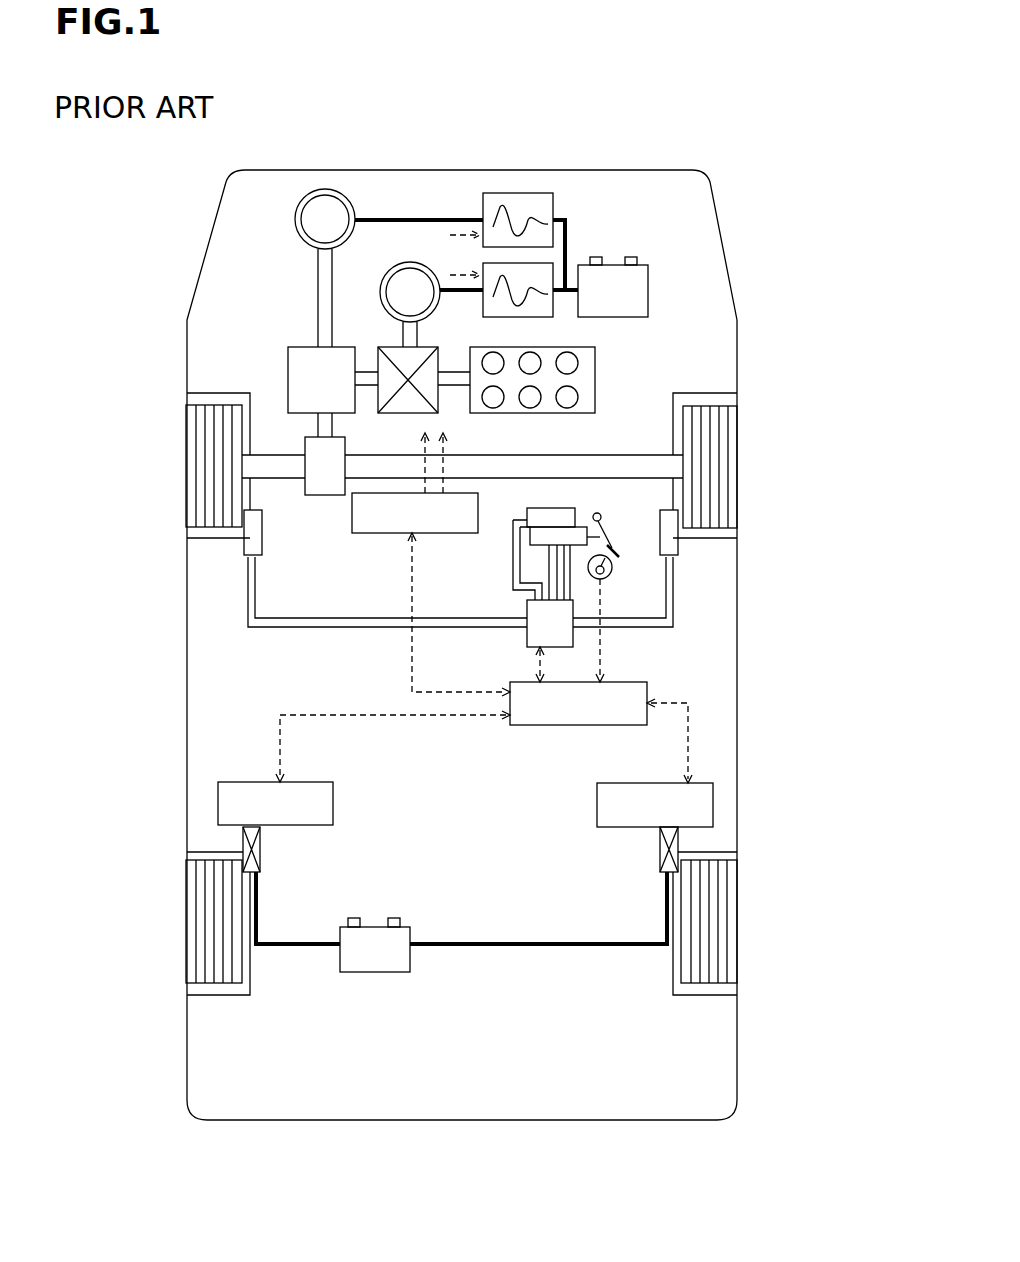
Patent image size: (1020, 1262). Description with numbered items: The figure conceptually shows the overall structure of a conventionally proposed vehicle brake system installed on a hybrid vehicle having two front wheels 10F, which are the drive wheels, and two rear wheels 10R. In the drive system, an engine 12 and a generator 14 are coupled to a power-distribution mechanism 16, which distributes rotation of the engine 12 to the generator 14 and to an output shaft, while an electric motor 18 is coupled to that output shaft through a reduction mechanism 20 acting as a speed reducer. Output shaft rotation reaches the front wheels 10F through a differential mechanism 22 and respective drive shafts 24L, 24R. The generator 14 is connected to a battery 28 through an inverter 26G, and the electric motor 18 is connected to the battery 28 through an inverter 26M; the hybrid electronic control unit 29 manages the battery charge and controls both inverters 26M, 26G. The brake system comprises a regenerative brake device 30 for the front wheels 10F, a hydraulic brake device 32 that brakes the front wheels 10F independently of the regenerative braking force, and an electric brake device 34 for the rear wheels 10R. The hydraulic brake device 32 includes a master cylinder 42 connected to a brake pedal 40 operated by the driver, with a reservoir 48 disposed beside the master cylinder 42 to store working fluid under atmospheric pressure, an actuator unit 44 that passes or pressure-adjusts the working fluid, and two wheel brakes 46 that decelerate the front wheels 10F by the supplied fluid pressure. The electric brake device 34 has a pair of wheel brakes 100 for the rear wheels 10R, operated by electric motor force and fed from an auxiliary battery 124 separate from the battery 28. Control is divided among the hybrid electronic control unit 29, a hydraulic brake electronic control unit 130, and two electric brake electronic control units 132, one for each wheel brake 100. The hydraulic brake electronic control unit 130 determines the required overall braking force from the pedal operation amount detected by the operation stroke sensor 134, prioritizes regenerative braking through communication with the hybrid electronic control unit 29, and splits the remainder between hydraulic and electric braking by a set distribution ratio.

The front wheels 10F is at (190, 417).
The rear wheels 10R is at (190, 968).
The engine 12 is at (588, 377).
The generator 14 is at (392, 266).
The power-distribution mechanism 16 is at (380, 355).
The electric motor 18 is at (304, 200).
The reduction mechanism 20 is at (300, 355).
The differential mechanism 22 is at (346, 441).
The left drive shaft 24L is at (278, 465).
The right drive shaft 24R is at (498, 460).
The inverter for electric motor 26M is at (530, 199).
The inverter for generator 26G is at (523, 312).
The battery 28 is at (640, 279).
The hybrid electronic control unit (HB-ECU) 29 is at (390, 535).
The regenerative brake device 30 is at (380, 194).
The hydraulic brake device 32 is at (684, 590).
The electric brake device 34 is at (390, 865).
The brake pedal 40 is at (612, 549).
The master cylinder 42 is at (578, 533).
The actuator unit 44 is at (530, 634).
The wheel brakes 46 is at (256, 533).
The reservoir 48 is at (538, 509).
The wheel brakes 100 is at (262, 854).
The auxiliary battery 124 is at (345, 965).
The hydraulic brake electronic control unit (HY-ECU) 130 is at (547, 727).
The electric brake electronic control units (EM-ECUs) 132 is at (313, 781).
The operation stroke sensor 134 is at (612, 574).